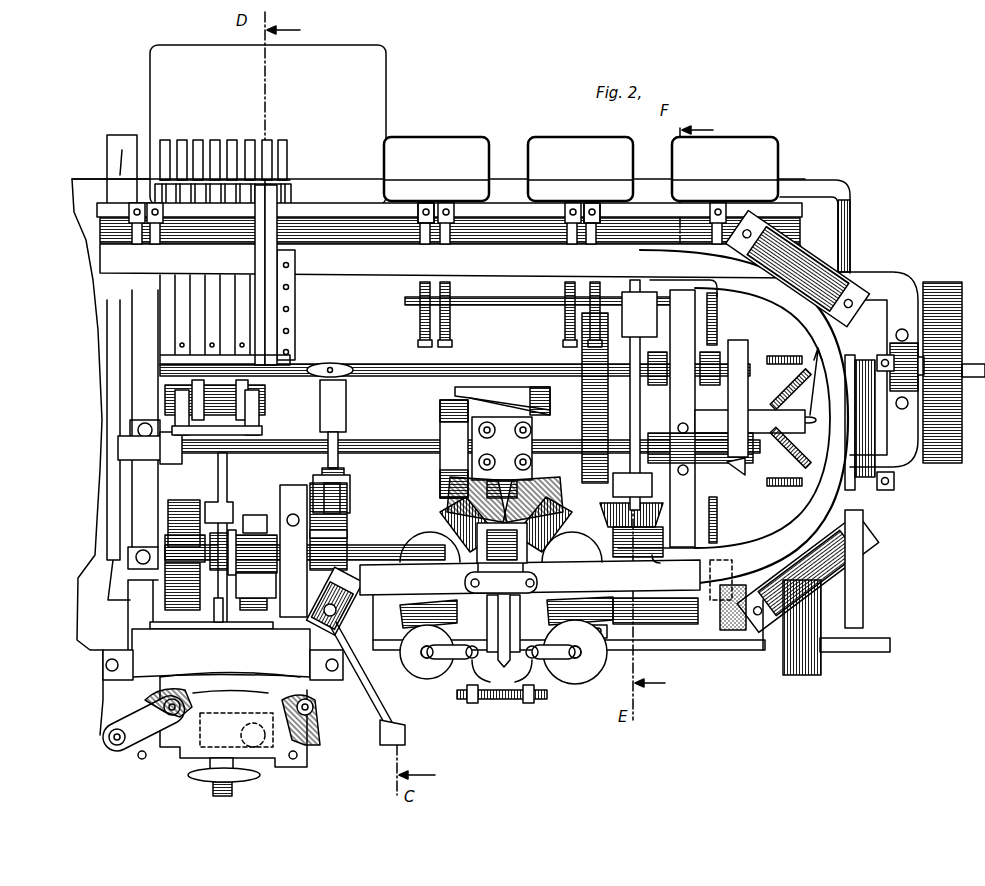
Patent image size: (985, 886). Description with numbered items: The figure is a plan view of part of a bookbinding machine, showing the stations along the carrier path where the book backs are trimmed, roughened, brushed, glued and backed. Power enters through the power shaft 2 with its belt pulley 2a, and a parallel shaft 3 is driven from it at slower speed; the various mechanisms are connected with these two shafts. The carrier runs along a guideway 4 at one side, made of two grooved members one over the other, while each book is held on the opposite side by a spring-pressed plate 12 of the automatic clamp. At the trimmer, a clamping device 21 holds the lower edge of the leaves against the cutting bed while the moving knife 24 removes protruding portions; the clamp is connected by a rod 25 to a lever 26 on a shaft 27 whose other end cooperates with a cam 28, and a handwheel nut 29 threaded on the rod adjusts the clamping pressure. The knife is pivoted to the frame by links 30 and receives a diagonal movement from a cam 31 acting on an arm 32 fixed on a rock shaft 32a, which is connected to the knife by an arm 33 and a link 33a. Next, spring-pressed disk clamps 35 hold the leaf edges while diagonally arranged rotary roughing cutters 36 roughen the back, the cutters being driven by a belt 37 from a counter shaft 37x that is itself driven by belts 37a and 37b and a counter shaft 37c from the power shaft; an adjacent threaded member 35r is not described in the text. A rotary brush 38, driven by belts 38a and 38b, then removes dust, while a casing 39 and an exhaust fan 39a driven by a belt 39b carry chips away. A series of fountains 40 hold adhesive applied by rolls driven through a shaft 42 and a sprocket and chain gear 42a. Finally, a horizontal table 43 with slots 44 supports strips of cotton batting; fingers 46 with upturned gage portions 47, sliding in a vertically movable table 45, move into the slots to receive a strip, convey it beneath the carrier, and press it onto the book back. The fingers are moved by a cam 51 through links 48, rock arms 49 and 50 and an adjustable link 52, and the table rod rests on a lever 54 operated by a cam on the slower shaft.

The power shaft 2 is at (478, 368).
The belt pulley 2a is at (932, 283).
The shaft 3 is at (365, 545).
The guideway 4 is at (435, 200).
The plate 12 is at (590, 209).
The clamping device 21 is at (275, 690).
The moving knife 24 is at (278, 625).
The rod 25 is at (222, 626).
The lever 26 is at (210, 548).
The shaft 27 is at (180, 548).
The cam 28 is at (255, 515).
The handwheel nut 29 is at (244, 778).
The links 30 is at (128, 752).
The cam 31 is at (178, 500).
The arm 32 is at (168, 590).
The rock shaft 32a is at (212, 605).
The arm 33 is at (530, 569).
The link 33a is at (413, 656).
The spring-pressed disk clamps 35 is at (562, 700).
The threaded rod 35r is at (430, 672).
The roughing cutters 36 is at (400, 617).
The belt 37 is at (540, 490).
The belt 37a is at (545, 405).
The belt 37b is at (582, 356).
The counter shaft 37c is at (440, 445).
The counter shaft 37x is at (472, 468).
The rotary brush 38 is at (735, 630).
The belt 38a is at (738, 398).
The belt 38b is at (745, 462).
The casing 39 is at (690, 640).
The exhaust fan 39a is at (823, 657).
The belt 39b is at (858, 580).
The fountains 40 is at (475, 155).
The shaft 42 is at (630, 410).
The sprocket and chain gear 42a is at (542, 313).
The horizontal table 43 is at (372, 95).
The slots 44 is at (213, 148).
The vertically movable table 45 is at (290, 195).
The fingers 46 is at (245, 240).
The gage portions 47 is at (270, 240).
The links 48 is at (185, 380).
The rock arm 49 is at (175, 412).
The rock arm 50 is at (346, 386).
The cam 51 is at (330, 530).
The adjustable link 52 is at (340, 440).
The lever 54 is at (227, 480).